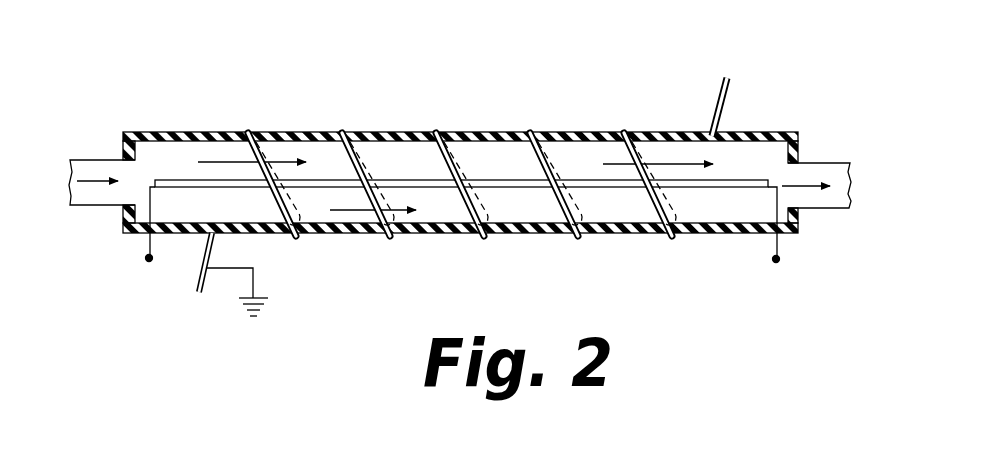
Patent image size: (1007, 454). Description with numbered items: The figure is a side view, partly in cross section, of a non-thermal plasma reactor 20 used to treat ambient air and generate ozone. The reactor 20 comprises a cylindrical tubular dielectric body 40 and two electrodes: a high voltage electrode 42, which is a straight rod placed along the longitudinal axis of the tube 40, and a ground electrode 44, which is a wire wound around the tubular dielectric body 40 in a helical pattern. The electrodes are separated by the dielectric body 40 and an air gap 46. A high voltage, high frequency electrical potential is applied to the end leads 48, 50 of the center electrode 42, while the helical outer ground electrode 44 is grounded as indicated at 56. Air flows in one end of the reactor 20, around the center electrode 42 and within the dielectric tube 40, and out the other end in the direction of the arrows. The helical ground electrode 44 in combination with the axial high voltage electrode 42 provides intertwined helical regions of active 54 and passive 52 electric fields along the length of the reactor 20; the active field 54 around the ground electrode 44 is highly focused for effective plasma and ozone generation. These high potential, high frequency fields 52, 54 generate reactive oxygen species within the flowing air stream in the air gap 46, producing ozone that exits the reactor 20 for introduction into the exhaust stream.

The non-thermal plasma reactor 20 is at (437, 191).
The cylindrical tubular dielectric body 40 is at (764, 118).
The high voltage electrode 42 is at (202, 186).
The ground electrode 44 is at (249, 132).
The air gap 46 is at (157, 160).
The end lead 48 is at (146, 248).
The end lead 50 is at (780, 257).
The passive electric field region 52 is at (294, 152).
The active electric field region 54 is at (302, 238).
The ground connection 56 is at (250, 280).